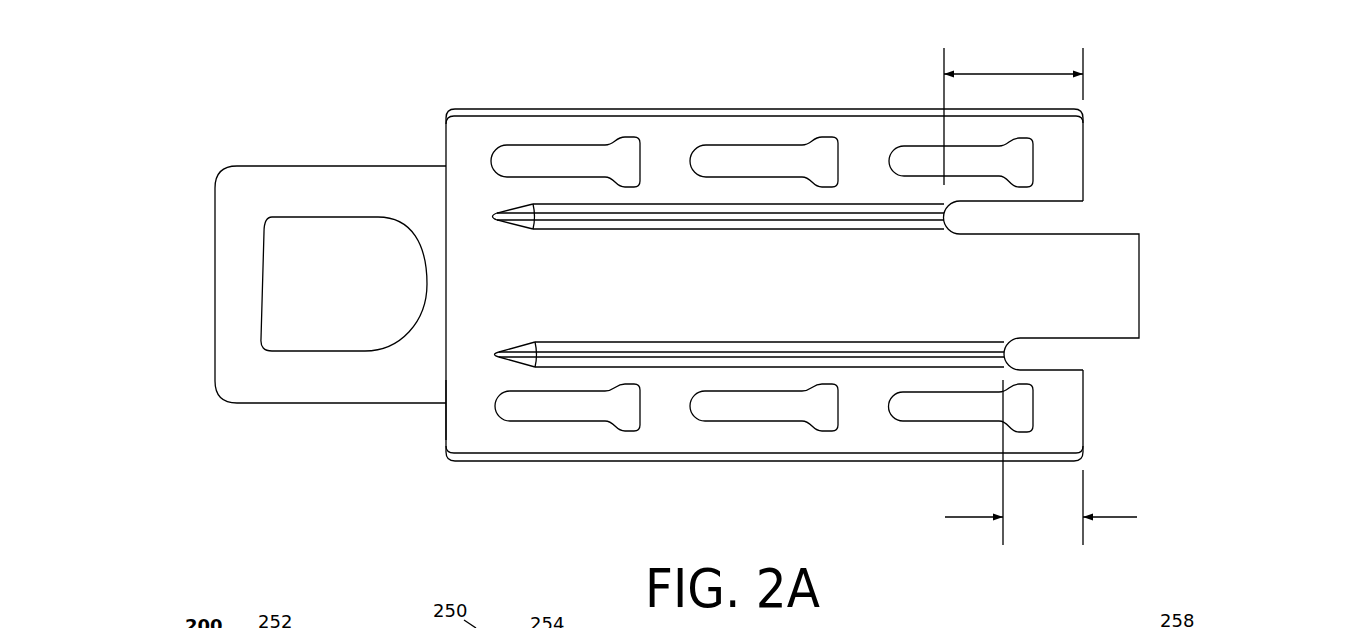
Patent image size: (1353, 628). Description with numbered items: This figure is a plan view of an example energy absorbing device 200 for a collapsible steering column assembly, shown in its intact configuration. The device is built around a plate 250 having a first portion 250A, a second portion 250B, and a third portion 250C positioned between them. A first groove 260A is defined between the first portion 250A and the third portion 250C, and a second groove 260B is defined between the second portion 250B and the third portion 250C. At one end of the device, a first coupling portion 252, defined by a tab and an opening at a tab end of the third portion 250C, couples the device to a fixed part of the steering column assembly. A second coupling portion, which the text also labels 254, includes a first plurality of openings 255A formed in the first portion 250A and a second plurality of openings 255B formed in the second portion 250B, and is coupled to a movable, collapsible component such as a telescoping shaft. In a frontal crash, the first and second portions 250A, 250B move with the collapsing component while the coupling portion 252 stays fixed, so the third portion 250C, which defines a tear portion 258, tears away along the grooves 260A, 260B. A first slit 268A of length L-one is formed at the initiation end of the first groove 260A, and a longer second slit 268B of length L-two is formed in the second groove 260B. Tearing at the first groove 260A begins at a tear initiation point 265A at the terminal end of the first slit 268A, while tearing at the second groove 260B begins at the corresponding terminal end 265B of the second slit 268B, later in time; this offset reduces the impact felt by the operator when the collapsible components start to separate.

The energy absorbing device 200 is at (155, 92).
The first coupling portion 252 is at (310, 163).
The plate 250 is at (446, 350).
The base of body 254 is at (476, 400).
The first portion 250A is at (667, 420).
The second portion 250B is at (667, 170).
The third portion 250C is at (540, 295).
The first plurality of openings 255A is at (523, 424).
The second plurality of openings 255B is at (561, 144).
The first groove 260A is at (881, 366).
The second groove 260B is at (868, 206).
The tear initiation point 265A is at (1000, 365).
The upper blade proximal end 265B is at (945, 215).
The first slit 268A is at (1065, 357).
The second slit 268B is at (1082, 213).
The tear portion 258 is at (1150, 300).